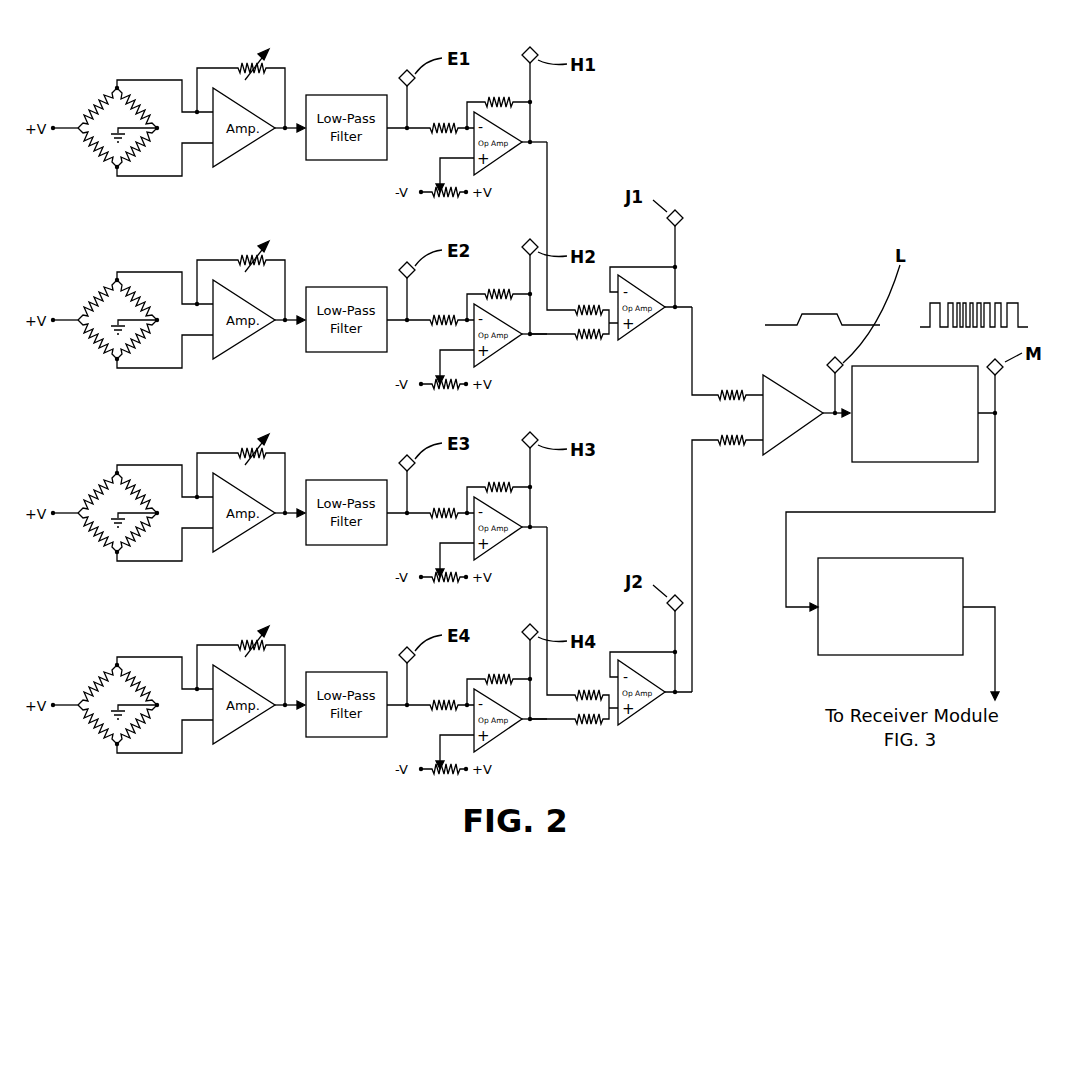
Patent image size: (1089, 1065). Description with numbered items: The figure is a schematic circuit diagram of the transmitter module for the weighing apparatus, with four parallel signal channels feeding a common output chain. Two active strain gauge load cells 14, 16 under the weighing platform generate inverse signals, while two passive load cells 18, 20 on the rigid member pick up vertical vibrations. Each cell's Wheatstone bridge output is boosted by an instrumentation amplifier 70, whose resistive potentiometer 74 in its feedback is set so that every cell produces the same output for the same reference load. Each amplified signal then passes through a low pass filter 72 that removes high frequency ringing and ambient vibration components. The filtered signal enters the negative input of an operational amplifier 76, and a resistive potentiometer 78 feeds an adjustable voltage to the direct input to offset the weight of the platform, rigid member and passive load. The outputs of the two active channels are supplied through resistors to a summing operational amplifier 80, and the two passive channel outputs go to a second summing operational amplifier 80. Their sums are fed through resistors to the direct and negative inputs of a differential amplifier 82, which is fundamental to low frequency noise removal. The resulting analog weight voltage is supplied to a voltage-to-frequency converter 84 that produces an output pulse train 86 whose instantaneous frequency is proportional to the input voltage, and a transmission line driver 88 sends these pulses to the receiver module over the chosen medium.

The load cell 14 is at (93, 84).
The load cell 16 is at (93, 276).
The load cell 18 is at (93, 547).
The load cell 20 is at (93, 740).
The instrumentation amplifier 70 is at (230, 145).
The low pass filter 72 is at (358, 102).
The resistive potentiometer 74 is at (257, 52).
The operational amplifier 76 is at (497, 157).
The resistive potentiometer 78 is at (440, 197).
The summing operational amplifier 80 is at (643, 322).
The differential amplifier 82 is at (790, 432).
The voltage-to-frequency converter 84 is at (902, 452).
The output pulse train 86 is at (985, 302).
The transmission line driver 88 is at (945, 577).